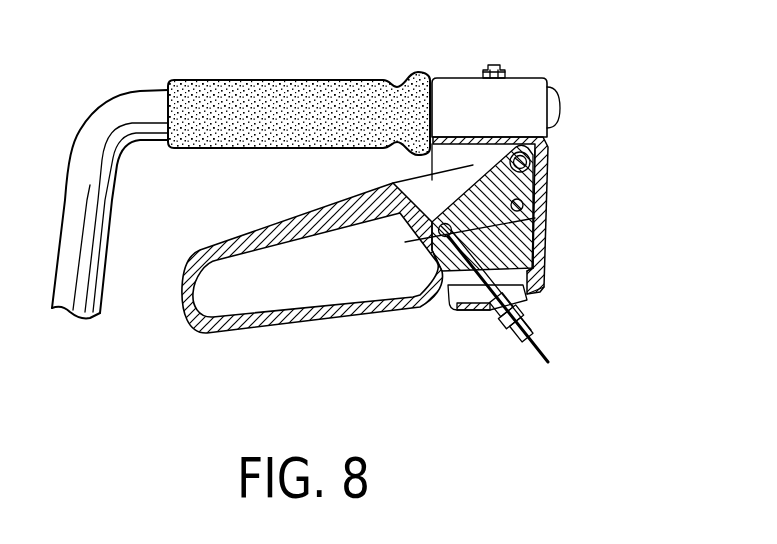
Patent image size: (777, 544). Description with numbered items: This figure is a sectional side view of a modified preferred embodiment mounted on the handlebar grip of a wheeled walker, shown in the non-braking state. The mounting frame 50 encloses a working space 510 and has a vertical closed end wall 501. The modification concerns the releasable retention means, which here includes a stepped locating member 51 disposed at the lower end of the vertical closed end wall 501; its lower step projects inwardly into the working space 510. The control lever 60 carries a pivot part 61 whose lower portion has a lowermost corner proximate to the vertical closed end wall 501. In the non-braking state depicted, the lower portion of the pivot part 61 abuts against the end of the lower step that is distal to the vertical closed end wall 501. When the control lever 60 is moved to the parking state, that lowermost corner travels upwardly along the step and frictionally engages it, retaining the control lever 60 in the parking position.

The working space 510 is at (473, 157).
The mounting frame 50 is at (559, 207).
The vertical closed end wall 501 is at (547, 237).
The stepped locating member 51 is at (543, 293).
The pivot part 61 is at (457, 308).
The control lever 60 is at (331, 345).